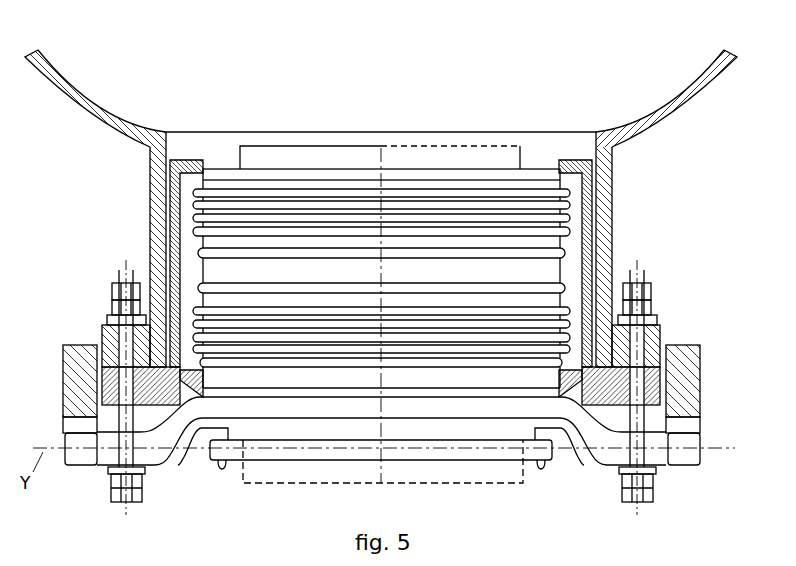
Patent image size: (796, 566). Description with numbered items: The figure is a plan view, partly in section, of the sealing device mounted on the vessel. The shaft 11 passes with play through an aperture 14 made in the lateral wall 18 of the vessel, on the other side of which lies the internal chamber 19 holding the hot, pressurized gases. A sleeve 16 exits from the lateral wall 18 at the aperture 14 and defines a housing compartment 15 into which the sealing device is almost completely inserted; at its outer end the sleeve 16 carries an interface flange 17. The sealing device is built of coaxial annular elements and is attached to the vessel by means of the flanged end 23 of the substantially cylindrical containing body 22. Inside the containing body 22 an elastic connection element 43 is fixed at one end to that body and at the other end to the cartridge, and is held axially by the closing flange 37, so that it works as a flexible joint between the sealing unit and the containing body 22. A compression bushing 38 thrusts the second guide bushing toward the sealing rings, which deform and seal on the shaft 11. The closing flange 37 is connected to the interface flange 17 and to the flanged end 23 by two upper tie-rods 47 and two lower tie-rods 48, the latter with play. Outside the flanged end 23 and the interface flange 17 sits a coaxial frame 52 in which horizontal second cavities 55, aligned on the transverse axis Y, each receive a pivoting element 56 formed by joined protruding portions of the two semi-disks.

The shaft 11 is at (271, 160).
The aperture 14 is at (162, 158).
The housing compartment 15 is at (590, 236).
The sleeve 16 is at (605, 193).
The interface flange 17 is at (648, 332).
The lateral wall 18 is at (667, 112).
The internal chamber 19 is at (62, 62).
The containing body 22 is at (186, 157).
The flanged end 23 is at (650, 388).
The closing flange 37 is at (447, 405).
The compression bushing 38 is at (243, 446).
The elastic connection element 43 is at (216, 272).
The upper tie-rod 47 is at (123, 347).
The lower tie-rod 48 is at (633, 435).
The frame 52 is at (688, 357).
The second cavity 55 is at (683, 421).
The pivoting element 56 is at (683, 456).